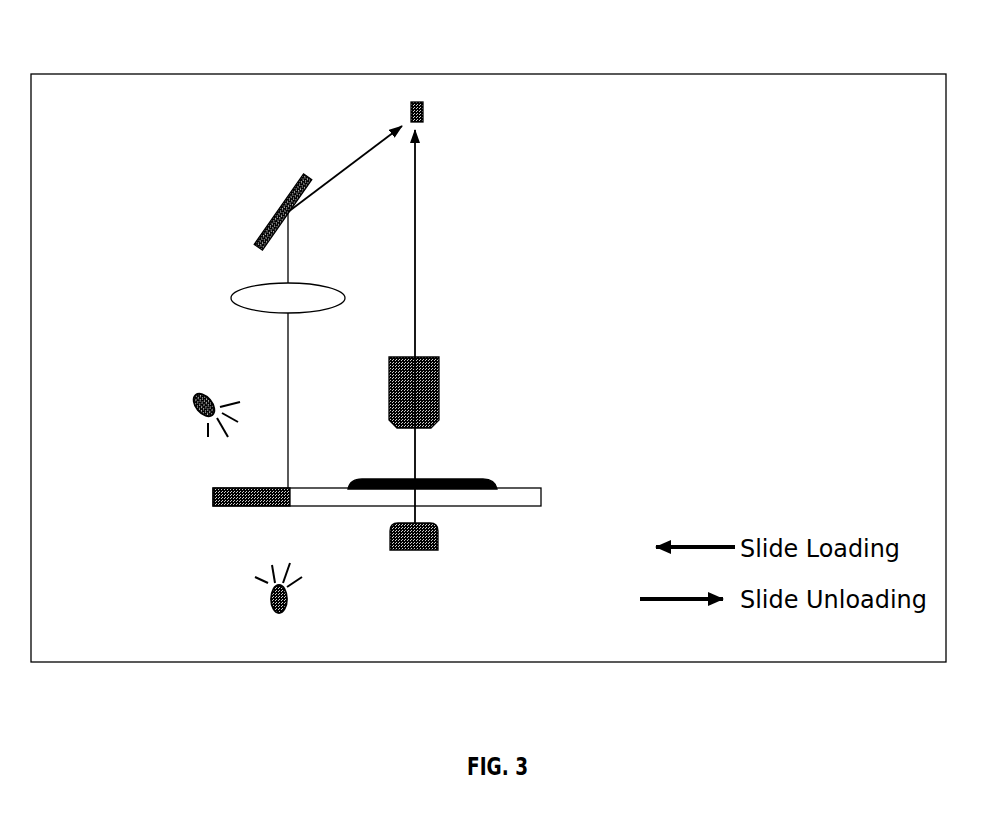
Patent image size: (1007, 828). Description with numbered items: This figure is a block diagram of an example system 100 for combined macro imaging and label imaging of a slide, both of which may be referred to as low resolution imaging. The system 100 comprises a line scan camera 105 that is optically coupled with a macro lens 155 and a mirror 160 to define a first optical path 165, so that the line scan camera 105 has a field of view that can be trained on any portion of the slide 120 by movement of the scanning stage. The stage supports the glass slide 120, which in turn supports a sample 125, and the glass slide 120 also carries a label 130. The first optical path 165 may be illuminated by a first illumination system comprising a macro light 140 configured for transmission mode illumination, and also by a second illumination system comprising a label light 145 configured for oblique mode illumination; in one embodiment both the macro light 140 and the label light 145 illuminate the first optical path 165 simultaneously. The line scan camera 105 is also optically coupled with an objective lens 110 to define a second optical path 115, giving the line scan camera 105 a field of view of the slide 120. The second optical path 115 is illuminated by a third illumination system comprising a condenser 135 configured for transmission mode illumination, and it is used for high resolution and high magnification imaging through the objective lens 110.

The system 100 is at (106, 64).
The line scan camera 105 is at (427, 113).
The objective lens 110 is at (427, 412).
The second optical path 115 is at (417, 278).
The slide 120 is at (544, 497).
The sample 125 is at (440, 487).
The label 130 is at (247, 498).
The condenser 135 is at (452, 565).
The macro light 140 is at (268, 613).
The label light 145 is at (190, 402).
The macro lens 155 is at (232, 298).
The mirror 160 is at (273, 223).
The first optical path 165 is at (345, 195).